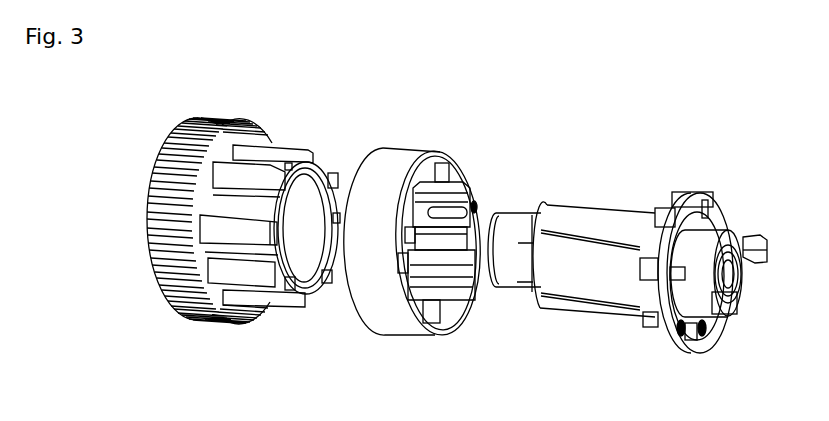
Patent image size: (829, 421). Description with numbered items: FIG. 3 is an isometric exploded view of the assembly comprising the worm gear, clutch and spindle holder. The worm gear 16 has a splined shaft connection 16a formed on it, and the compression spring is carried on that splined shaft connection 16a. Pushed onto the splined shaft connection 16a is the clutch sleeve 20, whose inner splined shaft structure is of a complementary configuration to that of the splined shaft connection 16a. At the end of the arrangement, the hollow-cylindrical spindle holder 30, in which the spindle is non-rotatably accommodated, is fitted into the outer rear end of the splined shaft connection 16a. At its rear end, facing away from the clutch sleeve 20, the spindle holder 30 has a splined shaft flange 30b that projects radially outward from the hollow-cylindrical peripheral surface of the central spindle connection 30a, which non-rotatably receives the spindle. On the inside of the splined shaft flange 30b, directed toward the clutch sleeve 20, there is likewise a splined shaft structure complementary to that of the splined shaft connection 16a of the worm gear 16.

The worm gear 16 is at (163, 163).
The splined shaft connection 16a is at (275, 257).
The clutch sleeve 20 is at (385, 298).
The spindle holder 30 is at (626, 249).
The spindle connection 30a is at (508, 283).
The splined shaft flange 30b is at (629, 262).